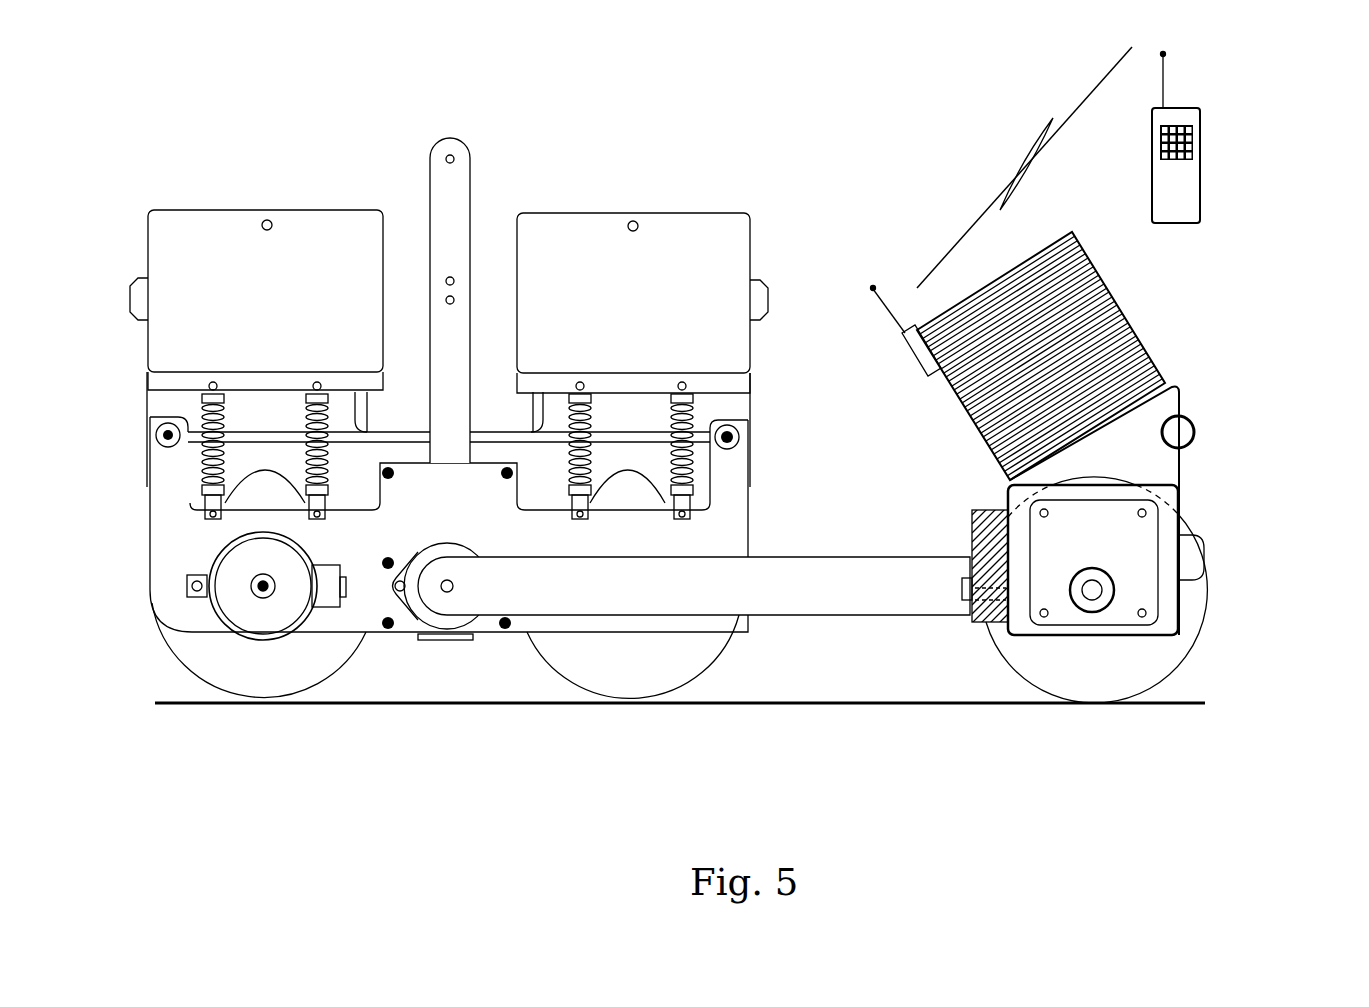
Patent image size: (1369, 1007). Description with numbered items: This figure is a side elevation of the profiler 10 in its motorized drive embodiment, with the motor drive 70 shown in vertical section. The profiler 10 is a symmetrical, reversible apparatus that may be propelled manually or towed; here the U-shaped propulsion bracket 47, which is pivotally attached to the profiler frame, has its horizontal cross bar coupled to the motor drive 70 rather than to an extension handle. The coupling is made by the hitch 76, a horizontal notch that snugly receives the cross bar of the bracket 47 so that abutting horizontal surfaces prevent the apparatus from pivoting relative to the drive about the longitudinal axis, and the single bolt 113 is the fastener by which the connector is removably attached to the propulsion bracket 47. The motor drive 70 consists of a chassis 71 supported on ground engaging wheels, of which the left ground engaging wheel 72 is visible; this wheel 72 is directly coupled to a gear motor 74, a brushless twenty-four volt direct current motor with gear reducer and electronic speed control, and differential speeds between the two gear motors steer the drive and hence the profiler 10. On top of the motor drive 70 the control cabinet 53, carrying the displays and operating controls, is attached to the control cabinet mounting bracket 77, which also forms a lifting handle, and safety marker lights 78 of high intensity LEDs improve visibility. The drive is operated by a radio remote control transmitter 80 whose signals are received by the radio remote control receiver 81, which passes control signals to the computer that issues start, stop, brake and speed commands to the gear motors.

The profiler 10 is at (316, 143).
The propulsion bracket 47 is at (865, 607).
The control cabinet 53 is at (1068, 317).
The motor drive 70 is at (1118, 375).
The chassis 71 is at (1183, 484).
The left ground engaging wheel 72 is at (1047, 650).
The gear motor 74 is at (1145, 598).
The hitch 76 is at (970, 541).
The control cabinet mounting bracket 77 is at (1183, 406).
The safety marker lights 78 is at (1190, 557).
The radio remote control transmitter 80 is at (1180, 195).
The radio remote control receiver 81 is at (925, 365).
The bolt 113 is at (963, 588).